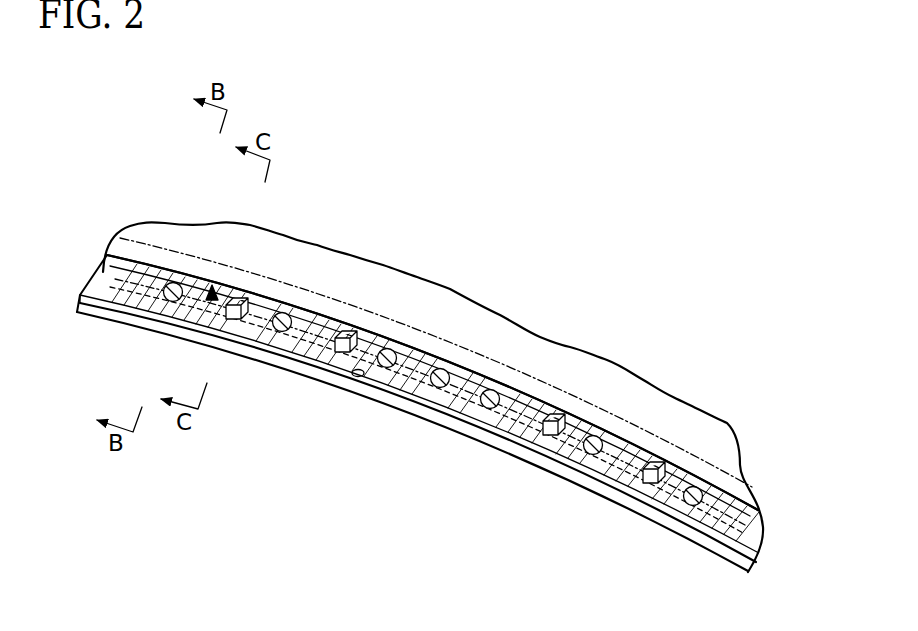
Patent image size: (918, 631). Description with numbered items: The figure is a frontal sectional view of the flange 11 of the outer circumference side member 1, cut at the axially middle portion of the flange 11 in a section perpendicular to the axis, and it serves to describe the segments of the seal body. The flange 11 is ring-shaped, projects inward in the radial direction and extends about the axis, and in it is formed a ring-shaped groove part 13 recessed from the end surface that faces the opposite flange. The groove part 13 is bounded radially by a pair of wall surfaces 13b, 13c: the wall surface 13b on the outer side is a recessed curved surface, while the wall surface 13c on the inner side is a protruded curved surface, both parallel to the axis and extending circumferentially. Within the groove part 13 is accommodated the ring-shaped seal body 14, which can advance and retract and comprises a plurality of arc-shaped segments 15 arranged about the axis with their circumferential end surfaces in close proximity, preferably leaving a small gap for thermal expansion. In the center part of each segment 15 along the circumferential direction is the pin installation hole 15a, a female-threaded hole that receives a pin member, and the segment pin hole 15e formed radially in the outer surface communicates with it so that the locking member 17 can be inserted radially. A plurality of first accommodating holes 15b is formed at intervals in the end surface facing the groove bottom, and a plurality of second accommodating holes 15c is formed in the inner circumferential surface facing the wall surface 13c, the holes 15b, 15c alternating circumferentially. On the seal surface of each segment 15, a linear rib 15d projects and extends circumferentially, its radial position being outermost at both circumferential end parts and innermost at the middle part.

The outer circumference side member 1 is at (385, 270).
The flange 11 is at (612, 381).
The groove part 13 is at (208, 287).
The wall surface 13b is at (305, 313).
The wall surface 13c is at (356, 377).
The seal body 14 is at (418, 346).
The segment 15 is at (103, 256).
The pin installation hole 15a is at (433, 390).
The first accommodating hole 15b is at (166, 300).
The second accommodating hole 15c is at (230, 321).
The rib 15d is at (676, 470).
The segment pin hole 15e is at (432, 382).
The locking member 17 is at (459, 364).